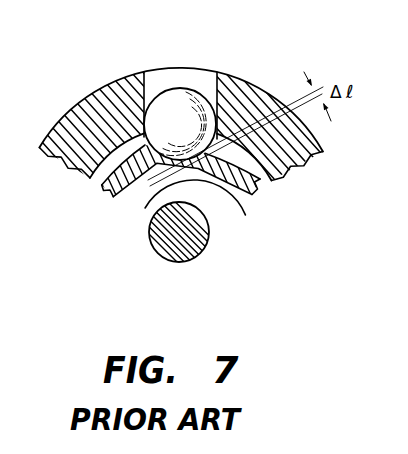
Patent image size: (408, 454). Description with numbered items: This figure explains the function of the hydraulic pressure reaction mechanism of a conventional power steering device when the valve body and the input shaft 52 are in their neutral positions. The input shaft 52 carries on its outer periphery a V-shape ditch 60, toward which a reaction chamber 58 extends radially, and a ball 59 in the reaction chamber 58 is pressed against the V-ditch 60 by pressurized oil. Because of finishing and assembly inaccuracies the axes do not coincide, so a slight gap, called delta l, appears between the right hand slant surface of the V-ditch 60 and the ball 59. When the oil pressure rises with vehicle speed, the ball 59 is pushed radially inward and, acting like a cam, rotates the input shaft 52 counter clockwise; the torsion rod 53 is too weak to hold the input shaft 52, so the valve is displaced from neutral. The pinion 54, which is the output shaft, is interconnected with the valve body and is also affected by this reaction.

The input shaft 52 is at (238, 192).
The torsion rod 53 is at (167, 243).
The pinion 54 is at (300, 143).
The reaction chamber 58 is at (145, 82).
The ball 59 is at (190, 103).
The V-shape ditch 60 is at (137, 187).